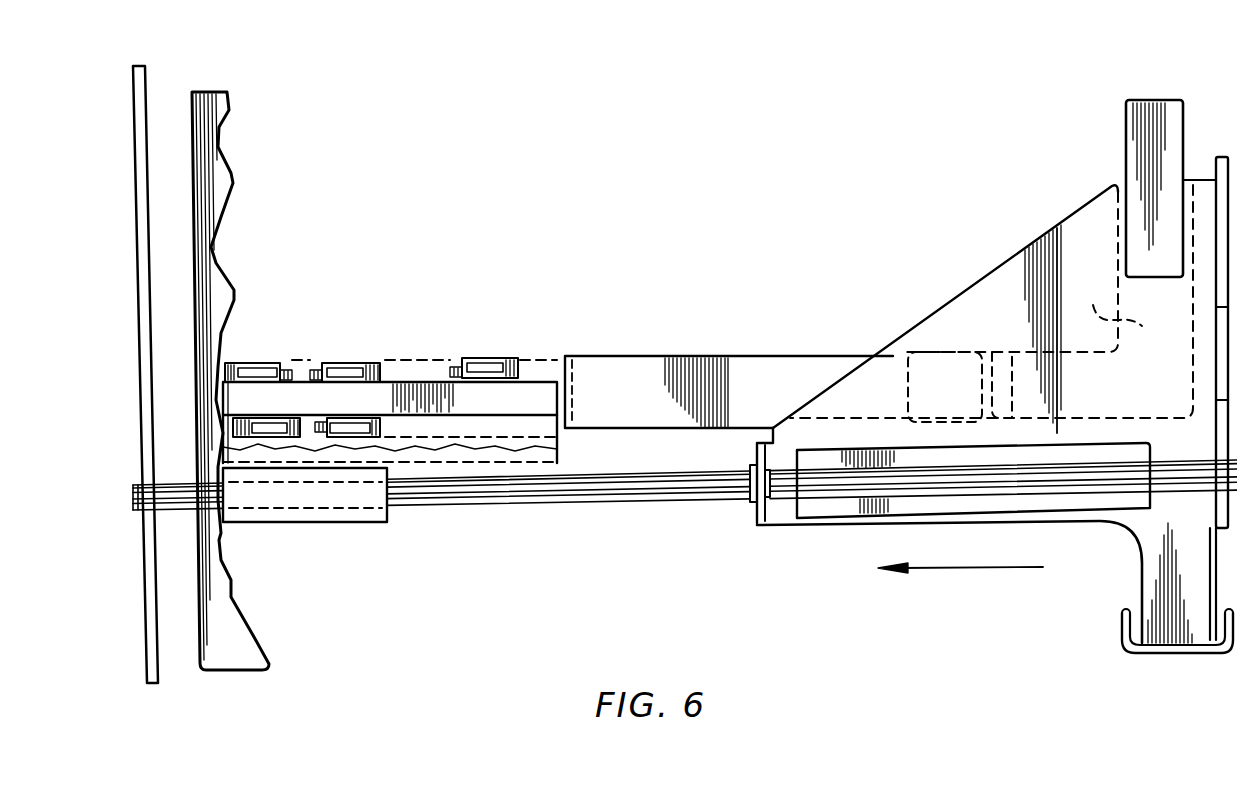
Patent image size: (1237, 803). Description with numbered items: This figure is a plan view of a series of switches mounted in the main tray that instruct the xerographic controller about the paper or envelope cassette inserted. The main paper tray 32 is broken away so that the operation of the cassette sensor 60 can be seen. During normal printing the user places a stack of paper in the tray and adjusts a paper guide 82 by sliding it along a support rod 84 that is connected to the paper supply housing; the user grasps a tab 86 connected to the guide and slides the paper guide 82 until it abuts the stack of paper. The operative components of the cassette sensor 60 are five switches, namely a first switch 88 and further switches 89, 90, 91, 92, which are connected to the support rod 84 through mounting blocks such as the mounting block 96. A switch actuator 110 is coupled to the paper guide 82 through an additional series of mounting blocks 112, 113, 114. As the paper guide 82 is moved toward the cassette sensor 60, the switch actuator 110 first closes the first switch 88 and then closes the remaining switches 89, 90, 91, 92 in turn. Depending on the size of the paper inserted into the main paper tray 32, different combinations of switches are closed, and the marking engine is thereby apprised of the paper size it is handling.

The main paper tray 32 is at (268, 668).
The cassette sensor 60 is at (391, 343).
The paper guide 82 is at (1222, 495).
The support rod 84 is at (672, 488).
The tab 86 is at (1192, 645).
The first switch 88 is at (510, 360).
The switch 89 is at (350, 362).
The switch 90 is at (387, 433).
The switch 91 is at (267, 364).
The switch 92 is at (240, 426).
The mounting block 96 is at (430, 382).
The switch actuator 110 is at (661, 357).
The mounting block 112 is at (1133, 130).
The mounting block 113 is at (1106, 303).
The mounting block 114 is at (1000, 327).